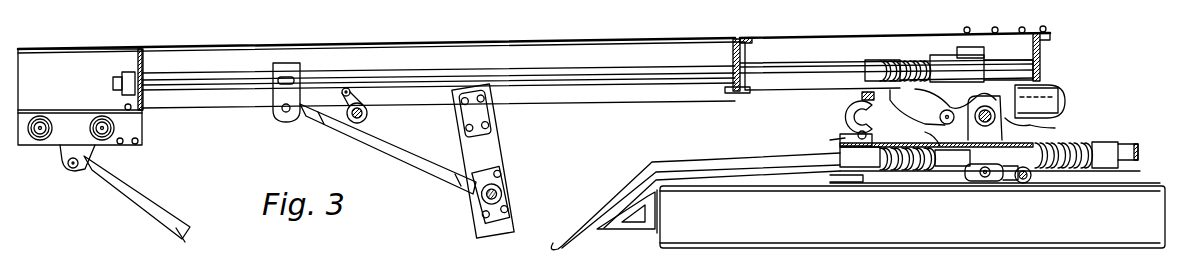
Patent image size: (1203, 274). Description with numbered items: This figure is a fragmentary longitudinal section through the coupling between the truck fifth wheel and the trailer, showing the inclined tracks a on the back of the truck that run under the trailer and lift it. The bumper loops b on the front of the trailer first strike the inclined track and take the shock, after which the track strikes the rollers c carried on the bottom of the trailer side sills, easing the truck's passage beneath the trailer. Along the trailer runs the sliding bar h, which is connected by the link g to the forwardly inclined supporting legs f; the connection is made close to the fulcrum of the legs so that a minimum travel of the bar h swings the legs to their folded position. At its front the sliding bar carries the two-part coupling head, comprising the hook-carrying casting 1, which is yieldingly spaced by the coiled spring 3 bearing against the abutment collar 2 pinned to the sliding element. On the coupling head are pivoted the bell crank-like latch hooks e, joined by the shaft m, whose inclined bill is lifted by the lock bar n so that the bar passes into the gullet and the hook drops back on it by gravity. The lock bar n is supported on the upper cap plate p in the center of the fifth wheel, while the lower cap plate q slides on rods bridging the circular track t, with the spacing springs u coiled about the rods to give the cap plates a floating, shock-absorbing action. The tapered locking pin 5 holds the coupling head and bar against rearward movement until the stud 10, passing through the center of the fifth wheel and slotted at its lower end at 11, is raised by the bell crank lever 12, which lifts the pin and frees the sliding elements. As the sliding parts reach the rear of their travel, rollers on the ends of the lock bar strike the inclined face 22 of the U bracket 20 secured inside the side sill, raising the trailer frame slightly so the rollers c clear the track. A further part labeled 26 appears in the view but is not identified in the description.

The sliding bar h is at (590, 70).
The inclined face 22 is at (856, 50).
The abutment collar 2 is at (873, 62).
The coiled spring 3 is at (900, 62).
The hook-carrying casting 1 is at (931, 62).
The latch hooks e is at (985, 75).
The bumper loops b is at (1065, 100).
The pivot arm 26 is at (370, 118).
The supporting legs f is at (505, 148).
The link g is at (403, 168).
The U bracket 20 is at (828, 118).
The rollers c is at (830, 140).
The shaft m is at (946, 110).
The upper cap plate p is at (924, 133).
The lock bar n is at (1039, 127).
The spacing springs u is at (890, 176).
The circular track t is at (1128, 137).
The tracks a is at (602, 196).
The lower cap plate q is at (960, 168).
The slot 11 is at (975, 183).
The stud 10 is at (1010, 184).
The lever 12 is at (1032, 184).
The tapered locking pin 5 is at (1070, 176).